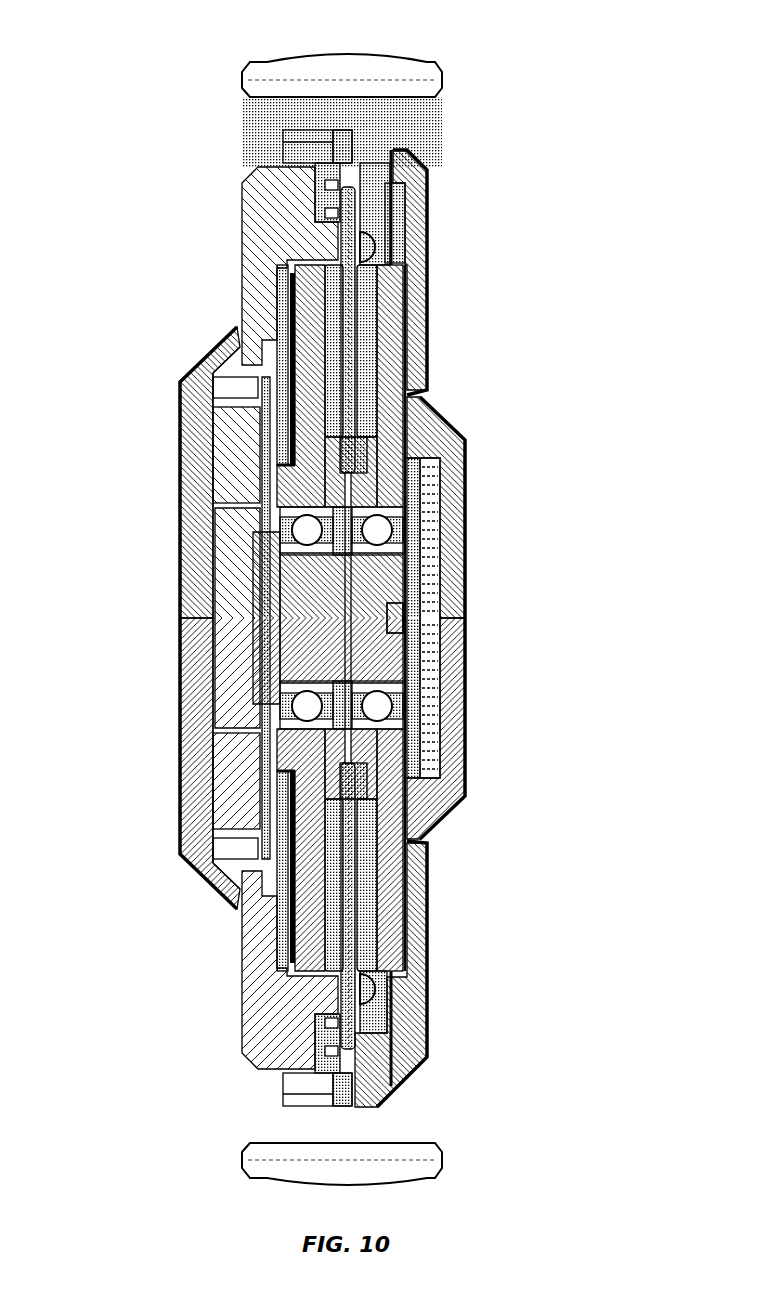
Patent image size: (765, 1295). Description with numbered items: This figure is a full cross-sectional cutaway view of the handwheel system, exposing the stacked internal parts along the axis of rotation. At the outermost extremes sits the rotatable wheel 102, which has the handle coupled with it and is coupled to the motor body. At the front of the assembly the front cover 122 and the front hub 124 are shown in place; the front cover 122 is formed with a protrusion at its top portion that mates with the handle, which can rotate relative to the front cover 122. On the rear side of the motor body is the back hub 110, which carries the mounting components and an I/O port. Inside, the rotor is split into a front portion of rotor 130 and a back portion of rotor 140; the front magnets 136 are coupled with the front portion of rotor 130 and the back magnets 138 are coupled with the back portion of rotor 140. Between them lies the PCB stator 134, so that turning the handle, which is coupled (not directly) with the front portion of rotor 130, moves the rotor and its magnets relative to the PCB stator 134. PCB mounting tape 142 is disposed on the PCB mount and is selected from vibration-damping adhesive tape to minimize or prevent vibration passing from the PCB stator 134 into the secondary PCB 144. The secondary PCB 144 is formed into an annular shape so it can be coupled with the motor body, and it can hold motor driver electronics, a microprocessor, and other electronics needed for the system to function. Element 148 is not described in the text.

The rotatable wheel 102 is at (432, 54).
The back hub 110 is at (176, 627).
The front cover 122 is at (415, 200).
The front hub 124 is at (472, 580).
The front portion of rotor 130 is at (390, 340).
The PCB stator 134 is at (350, 195).
The front magnets 136 is at (377, 297).
The back magnets 138 is at (337, 293).
The back portion of rotor 140 is at (307, 335).
The PCB mounting tape 142 is at (343, 187).
The secondary PCB 144 is at (338, 187).
The body 148 is at (262, 202).